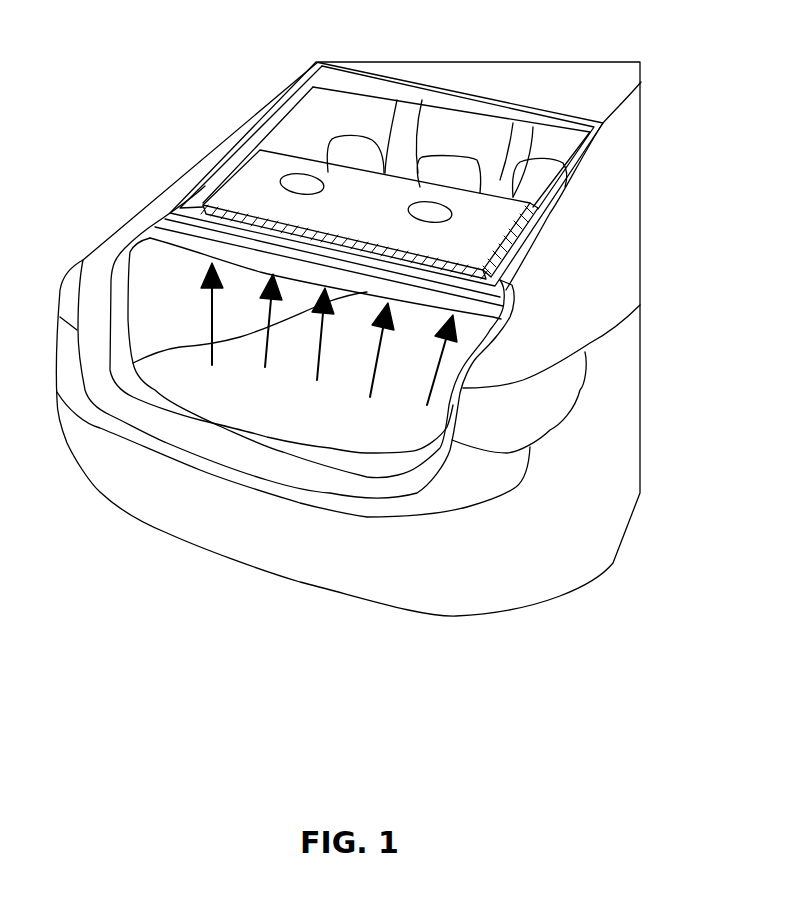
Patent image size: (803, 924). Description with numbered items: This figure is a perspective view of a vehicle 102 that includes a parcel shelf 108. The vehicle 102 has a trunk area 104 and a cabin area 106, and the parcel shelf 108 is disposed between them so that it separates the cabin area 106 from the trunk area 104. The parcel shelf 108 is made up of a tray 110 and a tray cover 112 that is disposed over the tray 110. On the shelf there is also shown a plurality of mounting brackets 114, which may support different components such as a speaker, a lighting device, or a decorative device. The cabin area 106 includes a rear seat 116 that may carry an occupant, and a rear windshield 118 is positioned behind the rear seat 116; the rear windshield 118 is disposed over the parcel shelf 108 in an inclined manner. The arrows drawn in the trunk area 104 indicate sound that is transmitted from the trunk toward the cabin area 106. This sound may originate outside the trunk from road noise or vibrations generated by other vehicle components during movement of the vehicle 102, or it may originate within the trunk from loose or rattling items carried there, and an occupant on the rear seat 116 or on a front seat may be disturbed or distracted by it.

The vehicle 102 is at (638, 417).
The trunk area 104 is at (278, 390).
The cabin area 106 is at (464, 112).
The parcel shelf 108 is at (374, 178).
The tray 110 is at (514, 237).
The tray cover 112 is at (263, 183).
The mounting brackets 114 is at (428, 213).
The rear seat 116 is at (450, 172).
The rear windshield 118 is at (293, 107).